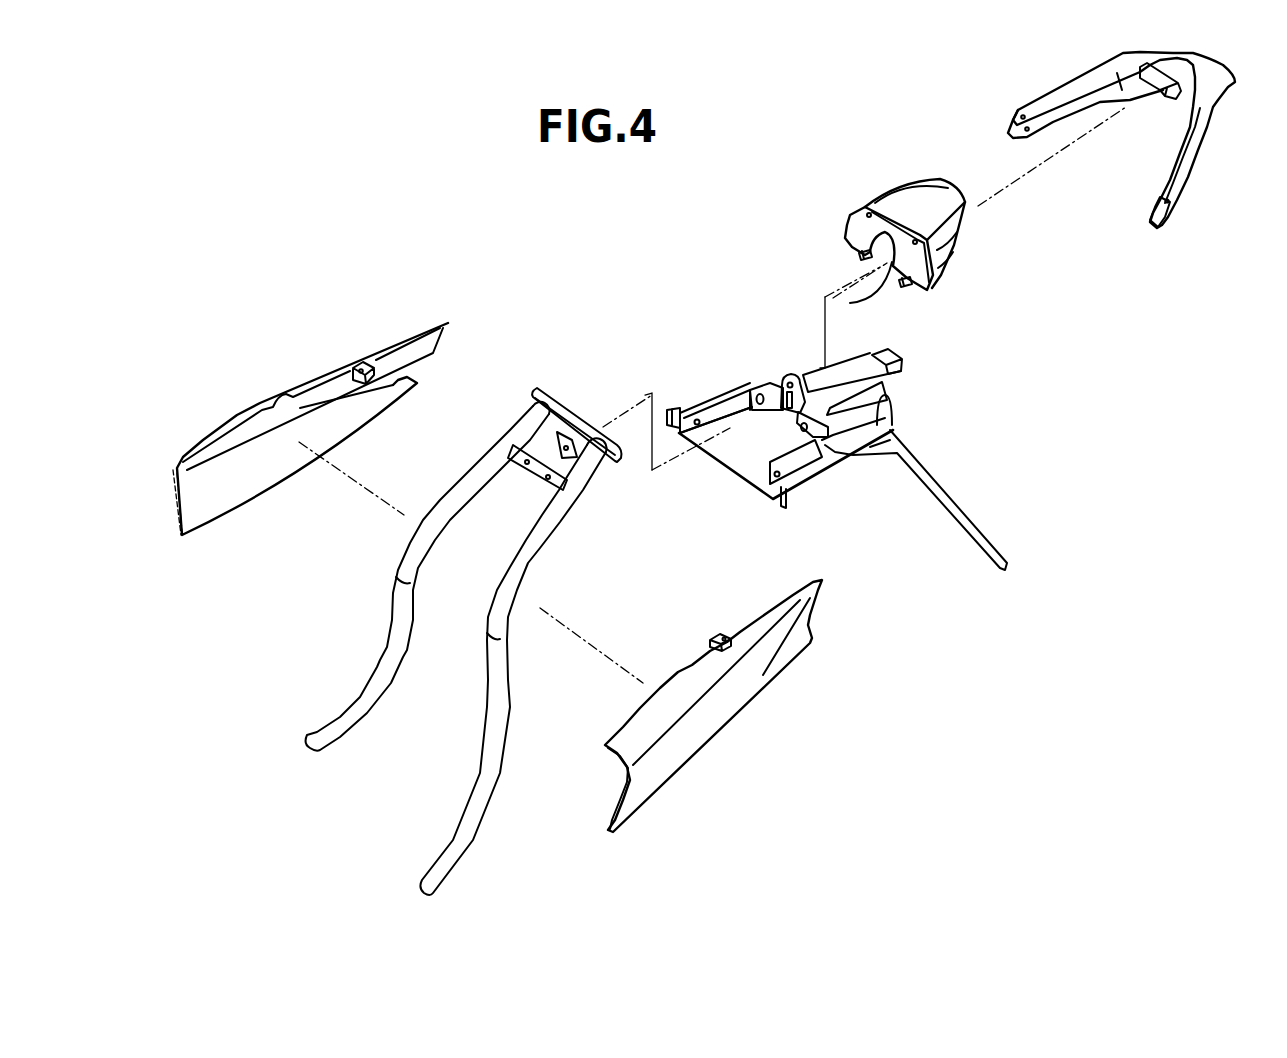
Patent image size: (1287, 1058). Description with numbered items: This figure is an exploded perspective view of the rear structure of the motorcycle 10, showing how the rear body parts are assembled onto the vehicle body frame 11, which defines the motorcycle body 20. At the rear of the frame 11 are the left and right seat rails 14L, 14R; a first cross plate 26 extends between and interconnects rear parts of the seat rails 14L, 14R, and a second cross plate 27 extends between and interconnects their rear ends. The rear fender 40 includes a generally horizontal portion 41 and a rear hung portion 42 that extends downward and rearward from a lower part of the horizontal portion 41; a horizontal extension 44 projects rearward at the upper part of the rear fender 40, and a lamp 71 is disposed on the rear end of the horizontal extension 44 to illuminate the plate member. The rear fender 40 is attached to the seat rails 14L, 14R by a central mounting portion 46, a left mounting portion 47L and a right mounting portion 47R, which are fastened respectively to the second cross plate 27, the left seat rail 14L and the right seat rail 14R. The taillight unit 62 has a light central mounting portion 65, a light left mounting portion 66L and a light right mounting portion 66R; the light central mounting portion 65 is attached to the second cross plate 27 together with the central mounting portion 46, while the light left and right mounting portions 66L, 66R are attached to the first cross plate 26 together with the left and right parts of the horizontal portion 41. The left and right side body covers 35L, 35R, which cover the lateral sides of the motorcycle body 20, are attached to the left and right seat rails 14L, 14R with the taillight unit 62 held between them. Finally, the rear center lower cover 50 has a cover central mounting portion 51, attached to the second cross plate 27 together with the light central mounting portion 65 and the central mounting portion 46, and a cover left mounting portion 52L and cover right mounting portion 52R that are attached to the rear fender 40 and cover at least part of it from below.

The motorcycle rear body structure 10 is at (385, 194).
The vehicle body frame 11 is at (380, 625).
The right seat rail 14R is at (373, 677).
The left seat rail 14L is at (487, 790).
The motorcycle body 20 is at (313, 570).
The first cross plate 26 is at (528, 472).
The second cross plate 27 is at (577, 430).
The right side body cover 35R is at (285, 388).
The left side body cover 35L is at (705, 727).
The rear fender 40 is at (873, 438).
The horizontal portion 41 is at (728, 453).
The rear hung portion 42 is at (970, 519).
The horizontal extension 44 is at (847, 372).
The central mounting portion 46 is at (790, 372).
The right mounting portion 47R is at (710, 412).
The left mounting portion 47L is at (800, 483).
The rear center lower cover 50 is at (1072, 171).
The cover central mounting portion 51 is at (1158, 98).
The cover right mounting portion 52R is at (1023, 142).
The cover left mounting portion 52L is at (1158, 225).
The taillight unit 62 is at (881, 213).
The light central mounting portion 65 is at (833, 298).
The light right mounting portion 66R is at (858, 257).
The light left mounting portion 66L is at (907, 287).
The lamp 71 is at (902, 355).